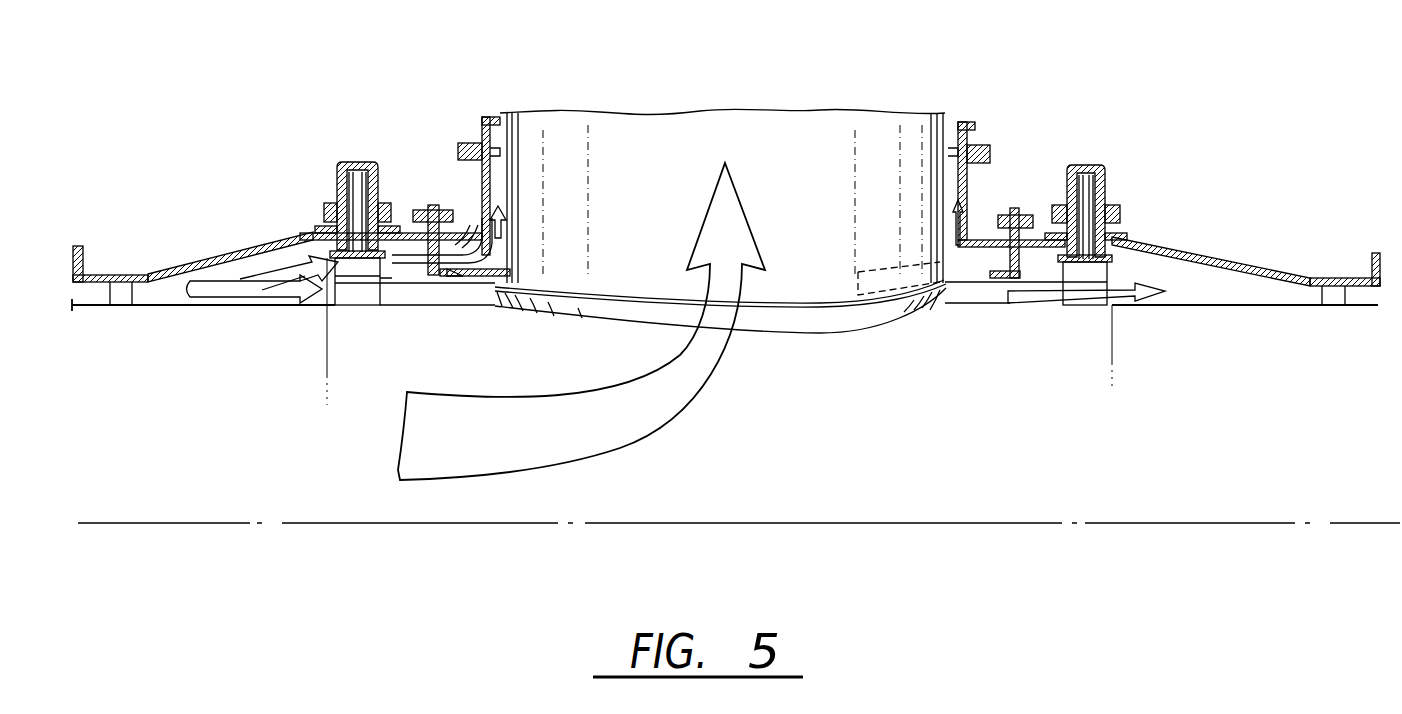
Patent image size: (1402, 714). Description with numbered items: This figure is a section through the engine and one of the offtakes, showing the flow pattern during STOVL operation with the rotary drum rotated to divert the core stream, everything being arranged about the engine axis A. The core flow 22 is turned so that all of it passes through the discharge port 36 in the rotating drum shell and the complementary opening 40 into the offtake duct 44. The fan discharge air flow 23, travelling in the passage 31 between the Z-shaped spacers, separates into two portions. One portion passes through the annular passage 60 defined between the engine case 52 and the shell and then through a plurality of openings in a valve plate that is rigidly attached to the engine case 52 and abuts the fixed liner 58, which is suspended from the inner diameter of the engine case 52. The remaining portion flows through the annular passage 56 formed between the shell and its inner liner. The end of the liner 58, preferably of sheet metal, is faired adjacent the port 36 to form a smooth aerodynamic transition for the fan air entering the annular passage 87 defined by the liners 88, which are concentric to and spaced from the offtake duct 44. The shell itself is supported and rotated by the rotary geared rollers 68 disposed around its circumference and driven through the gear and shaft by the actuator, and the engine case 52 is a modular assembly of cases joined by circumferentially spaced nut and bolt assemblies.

The core flow 22 is at (675, 400).
The fan discharge air flow 23 is at (468, 240).
The passage 31 is at (157, 305).
The discharge port 36 is at (503, 290).
The opening 40 is at (507, 263).
The offtake duct 44 is at (968, 165).
The engine case 52 is at (1143, 238).
The annular passage 56 is at (447, 298).
The fixed annular portion or liner 58 is at (508, 268).
The annular passage 60 is at (472, 238).
The rotary geared rollers 68 is at (323, 300).
The annular passage 87 is at (478, 152).
The liners 88 is at (508, 137).
The engine axis A is at (905, 523).